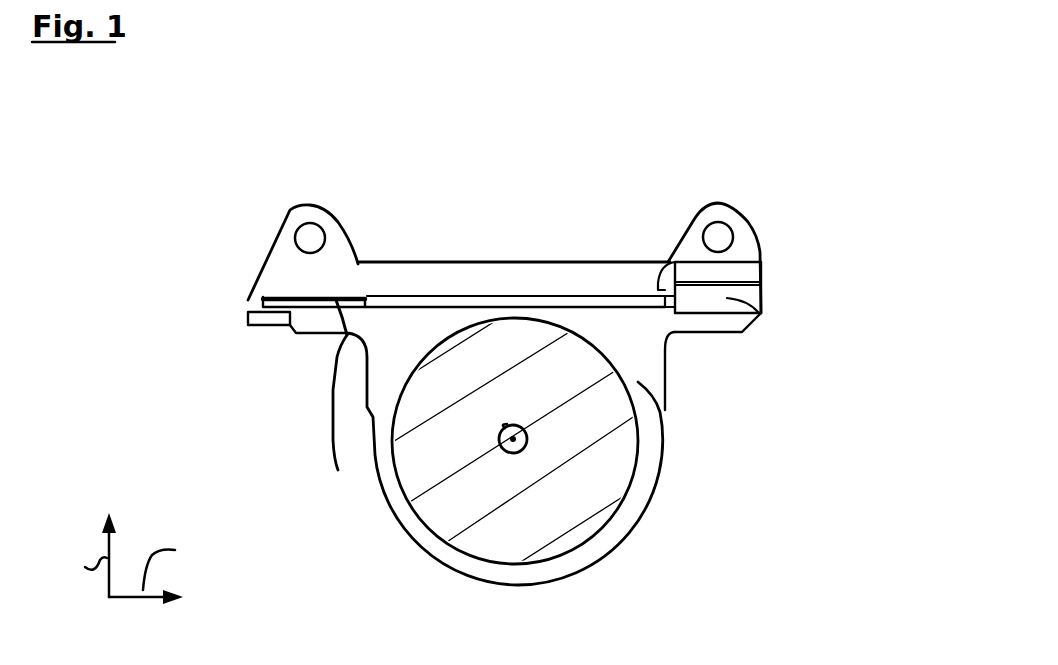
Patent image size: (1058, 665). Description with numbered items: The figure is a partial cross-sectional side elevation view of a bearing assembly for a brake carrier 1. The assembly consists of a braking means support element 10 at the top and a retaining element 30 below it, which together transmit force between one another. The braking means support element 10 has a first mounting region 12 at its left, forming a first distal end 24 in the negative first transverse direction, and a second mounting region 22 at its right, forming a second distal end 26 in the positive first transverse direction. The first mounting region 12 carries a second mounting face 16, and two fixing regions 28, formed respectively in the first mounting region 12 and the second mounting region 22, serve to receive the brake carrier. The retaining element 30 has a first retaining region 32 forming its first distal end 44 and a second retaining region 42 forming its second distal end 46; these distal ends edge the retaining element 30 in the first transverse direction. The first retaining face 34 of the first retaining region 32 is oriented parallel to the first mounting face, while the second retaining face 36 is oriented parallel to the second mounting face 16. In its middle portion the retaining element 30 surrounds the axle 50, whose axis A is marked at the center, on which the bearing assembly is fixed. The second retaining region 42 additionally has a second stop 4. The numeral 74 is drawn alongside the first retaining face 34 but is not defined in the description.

The brake carrier 1 is at (464, 130).
The second stop 4 is at (761, 313).
The braking means support element 10 is at (489, 270).
The first mounting region 12 is at (230, 225).
The first distal end 24 is at (228, 262).
The second mounting face 16 is at (338, 299).
The second mounting region 22 is at (800, 233).
The second distal end 26 is at (782, 240).
The fixing region 28 is at (303, 217).
The retaining element 30 is at (658, 448).
The first retaining region 32 is at (303, 355).
The first distal end 44 is at (278, 395).
The first retaining face 34 is at (253, 300).
The projection 74 is at (180, 340).
The second retaining face 36 is at (338, 470).
The second retaining region 42 is at (812, 348).
The second distal end 46 is at (790, 334).
The axle 50 is at (450, 505).
The axis A is at (520, 452).